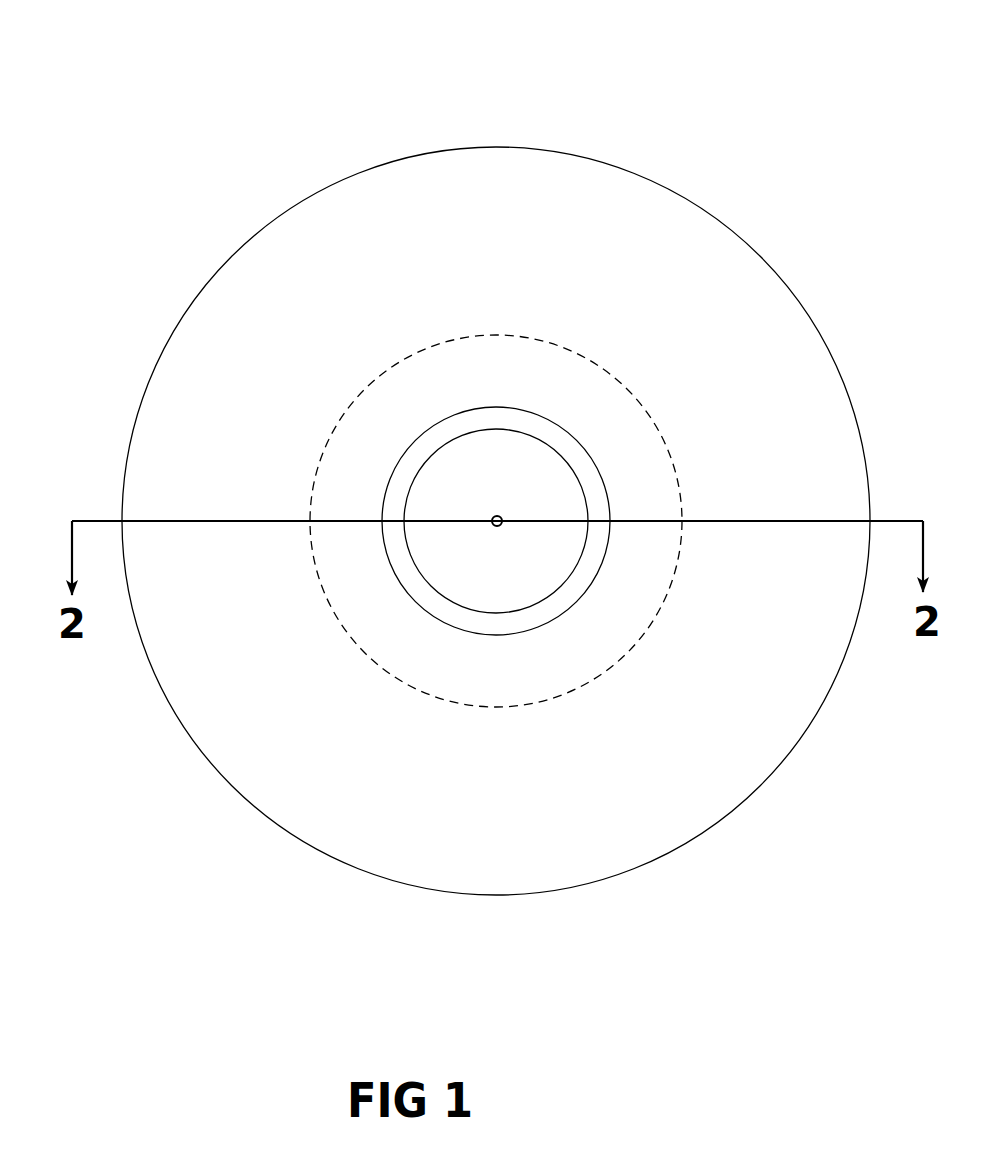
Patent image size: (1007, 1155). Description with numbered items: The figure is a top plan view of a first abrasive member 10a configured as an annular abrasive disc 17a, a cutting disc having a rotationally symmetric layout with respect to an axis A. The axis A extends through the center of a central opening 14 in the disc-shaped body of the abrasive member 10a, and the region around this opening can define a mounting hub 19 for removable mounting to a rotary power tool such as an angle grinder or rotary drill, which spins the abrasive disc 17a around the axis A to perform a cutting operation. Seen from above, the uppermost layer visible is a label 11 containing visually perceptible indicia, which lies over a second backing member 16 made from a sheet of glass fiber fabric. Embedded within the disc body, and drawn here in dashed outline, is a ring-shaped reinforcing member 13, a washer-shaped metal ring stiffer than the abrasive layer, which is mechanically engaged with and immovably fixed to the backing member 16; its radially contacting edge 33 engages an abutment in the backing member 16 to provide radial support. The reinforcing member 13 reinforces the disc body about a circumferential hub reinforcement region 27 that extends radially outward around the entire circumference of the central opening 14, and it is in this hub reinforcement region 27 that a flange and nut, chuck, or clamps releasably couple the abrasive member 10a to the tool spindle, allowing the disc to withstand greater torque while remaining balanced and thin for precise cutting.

The abrasive member 10a is at (768, 867).
The abrasive disc 17a is at (212, 853).
The second backing member 16 is at (178, 323).
The label 11 is at (272, 332).
The reinforcing member 13 is at (397, 347).
The circumferential hub reinforcement region 27 is at (475, 322).
The central opening 14 is at (598, 460).
The contacting edge 33 is at (410, 487).
The mounting hub 19 is at (512, 380).
The axis A is at (499, 519).